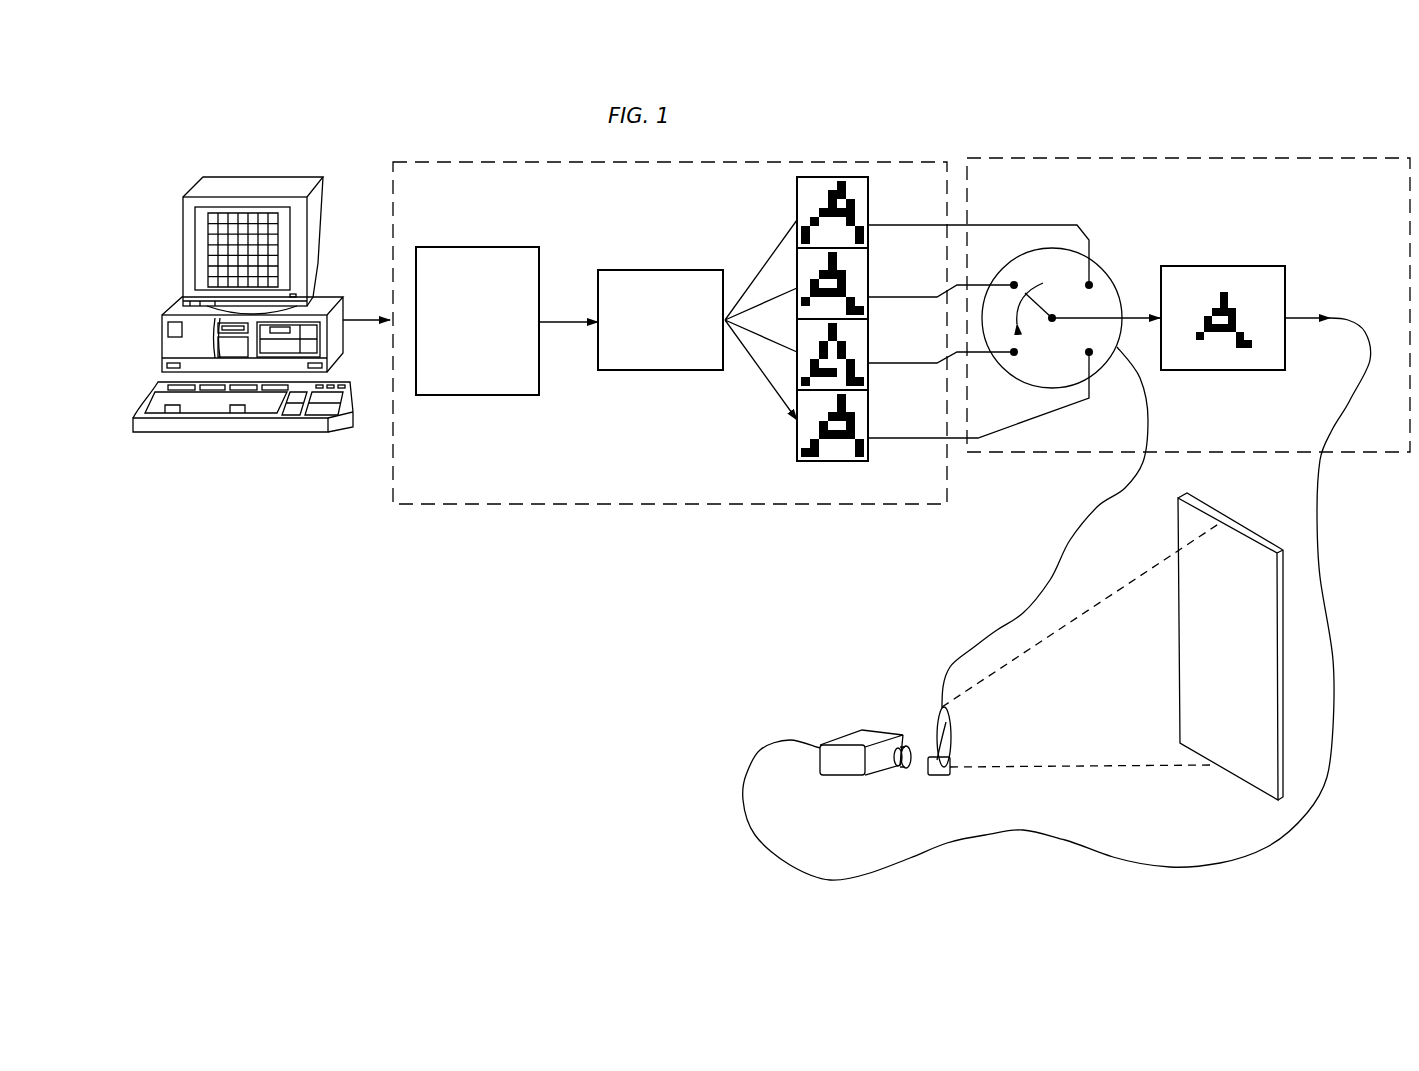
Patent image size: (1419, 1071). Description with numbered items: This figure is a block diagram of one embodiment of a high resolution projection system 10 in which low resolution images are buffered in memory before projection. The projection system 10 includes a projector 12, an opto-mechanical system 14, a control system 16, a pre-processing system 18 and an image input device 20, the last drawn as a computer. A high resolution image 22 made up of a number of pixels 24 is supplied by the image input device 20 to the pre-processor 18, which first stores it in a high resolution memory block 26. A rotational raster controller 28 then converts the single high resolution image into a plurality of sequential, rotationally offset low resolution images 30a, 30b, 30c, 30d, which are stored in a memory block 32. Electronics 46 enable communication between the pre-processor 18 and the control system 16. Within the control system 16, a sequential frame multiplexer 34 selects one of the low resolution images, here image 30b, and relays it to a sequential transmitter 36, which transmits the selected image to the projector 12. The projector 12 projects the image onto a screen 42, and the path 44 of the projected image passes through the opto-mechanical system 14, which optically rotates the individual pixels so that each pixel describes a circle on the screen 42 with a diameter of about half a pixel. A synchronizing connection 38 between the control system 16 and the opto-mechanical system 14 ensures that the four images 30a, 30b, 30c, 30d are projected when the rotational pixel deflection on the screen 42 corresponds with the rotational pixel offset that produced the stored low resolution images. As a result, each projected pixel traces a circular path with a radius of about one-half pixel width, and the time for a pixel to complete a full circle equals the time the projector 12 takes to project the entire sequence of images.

The projection system 10 is at (688, 583).
The projector 12 is at (855, 737).
The opto-mechanical system 14 is at (933, 715).
The control system 16 is at (1298, 452).
The pre-processing system 18 is at (538, 505).
The image input device 20 is at (254, 266).
The high resolution image 22 is at (207, 228).
The pixels 24 is at (277, 245).
The high resolution memory block 26 is at (476, 247).
The rotational raster controller 28 is at (662, 270).
The low resolution image 30a is at (868, 190).
The low resolution image 30b is at (868, 258).
The low resolution image 30c is at (868, 329).
The low resolution image 30d is at (868, 400).
The memory block 32 is at (1030, 332).
The sequential frame multiplexer 34 is at (1103, 268).
The sequential transmitter 36 is at (1230, 266).
The synchronizing connection 38 is at (1023, 612).
The screen 42 is at (1248, 770).
The path 44 is at (1083, 617).
The electronics 46 is at (957, 443).